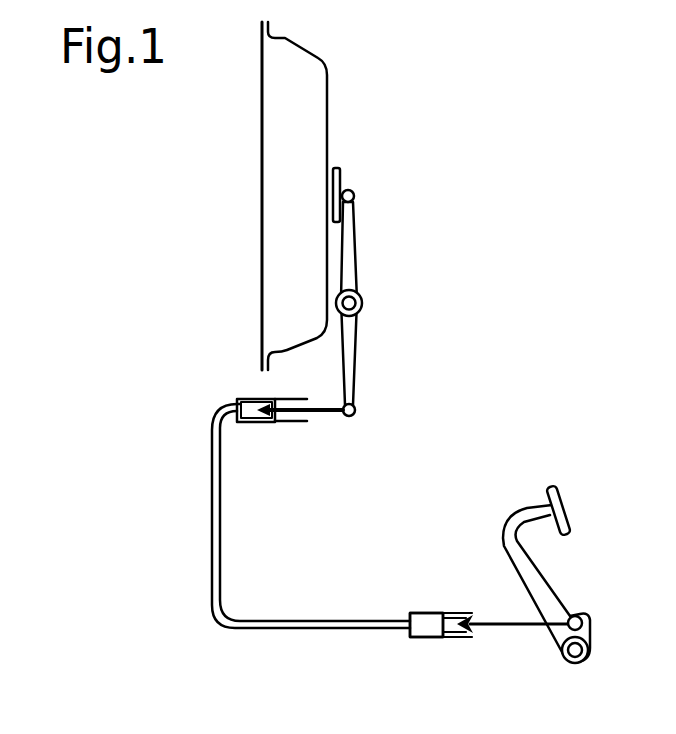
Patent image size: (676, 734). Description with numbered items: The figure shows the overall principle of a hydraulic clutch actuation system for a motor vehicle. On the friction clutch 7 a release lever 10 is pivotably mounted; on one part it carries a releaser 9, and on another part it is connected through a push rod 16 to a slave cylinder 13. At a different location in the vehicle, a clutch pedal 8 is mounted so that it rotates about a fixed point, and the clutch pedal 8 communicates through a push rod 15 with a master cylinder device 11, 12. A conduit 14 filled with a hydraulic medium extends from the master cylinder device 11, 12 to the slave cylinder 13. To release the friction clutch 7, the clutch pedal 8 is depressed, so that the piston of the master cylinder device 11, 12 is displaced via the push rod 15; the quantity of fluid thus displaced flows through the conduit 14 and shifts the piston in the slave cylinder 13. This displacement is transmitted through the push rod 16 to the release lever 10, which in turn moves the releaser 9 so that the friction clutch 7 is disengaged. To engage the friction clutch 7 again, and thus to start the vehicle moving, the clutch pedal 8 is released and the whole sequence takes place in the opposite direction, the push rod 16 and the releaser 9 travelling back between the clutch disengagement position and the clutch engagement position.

The friction clutch 7 is at (362, 117).
The clutch pedal 8 is at (520, 520).
The releaser 9 is at (341, 180).
The release lever 10 is at (350, 270).
The master cylinder device 11 is at (400, 602).
The master cylinder device 12 is at (426, 625).
The slave cylinder 13 is at (224, 368).
The conduit 14 is at (212, 469).
The push rod 15 is at (490, 620).
The push rod 16 is at (324, 417).